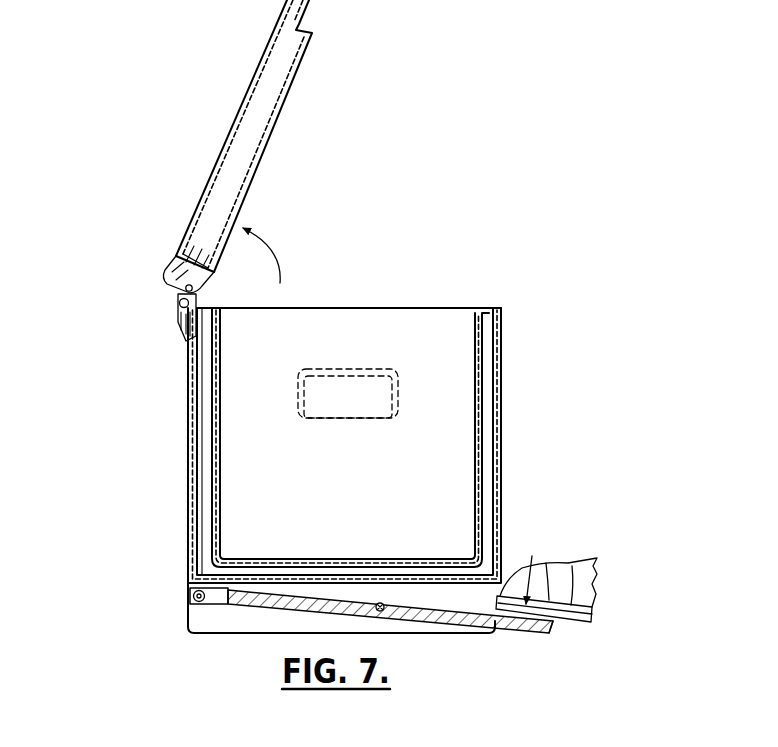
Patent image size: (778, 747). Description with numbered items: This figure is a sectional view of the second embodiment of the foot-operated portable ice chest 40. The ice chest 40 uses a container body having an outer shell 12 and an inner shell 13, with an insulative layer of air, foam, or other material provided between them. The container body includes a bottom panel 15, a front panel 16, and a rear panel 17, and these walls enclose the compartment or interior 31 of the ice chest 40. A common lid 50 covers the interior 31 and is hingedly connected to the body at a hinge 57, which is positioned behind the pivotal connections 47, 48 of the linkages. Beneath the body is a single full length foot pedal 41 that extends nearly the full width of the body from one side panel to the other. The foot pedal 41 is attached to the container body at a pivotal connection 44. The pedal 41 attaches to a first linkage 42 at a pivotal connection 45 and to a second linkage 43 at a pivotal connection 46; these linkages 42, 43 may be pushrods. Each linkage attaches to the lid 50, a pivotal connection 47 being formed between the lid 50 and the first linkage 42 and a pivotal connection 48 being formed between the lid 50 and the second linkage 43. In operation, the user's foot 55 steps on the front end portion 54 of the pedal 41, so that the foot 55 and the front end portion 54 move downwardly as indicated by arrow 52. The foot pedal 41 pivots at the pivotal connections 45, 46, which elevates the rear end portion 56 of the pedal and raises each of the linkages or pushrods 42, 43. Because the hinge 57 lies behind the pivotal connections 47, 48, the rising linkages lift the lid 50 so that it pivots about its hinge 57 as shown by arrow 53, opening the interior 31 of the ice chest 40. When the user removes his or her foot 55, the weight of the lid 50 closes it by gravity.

The portable ice chest 40 is at (358, 369).
The outer shell 12 is at (502, 382).
The front panel 16 is at (502, 436).
The inner shell 13 is at (477, 463).
The compartment or interior 31 is at (386, 328).
The rear panel 17 is at (187, 530).
The lid 50 is at (243, 102).
The pivotal connection 47 is at (131, 290).
The pivotal connection 48 is at (172, 277).
The hinge 57 is at (172, 308).
The arrow 53 is at (263, 251).
The first linkage 42 is at (134, 434).
The second linkage 43 is at (188, 469).
The pivotal connection 44 is at (390, 622).
The bottom panel 15 is at (433, 598).
The full length foot pedal 41 is at (522, 630).
The pivotal connection 45 is at (139, 646).
The pivotal connection 46 is at (193, 597).
The rear end portion 56 is at (208, 606).
The user's foot 55 is at (593, 579).
The front end portion 54 is at (553, 633).
The arrow 52 is at (522, 572).